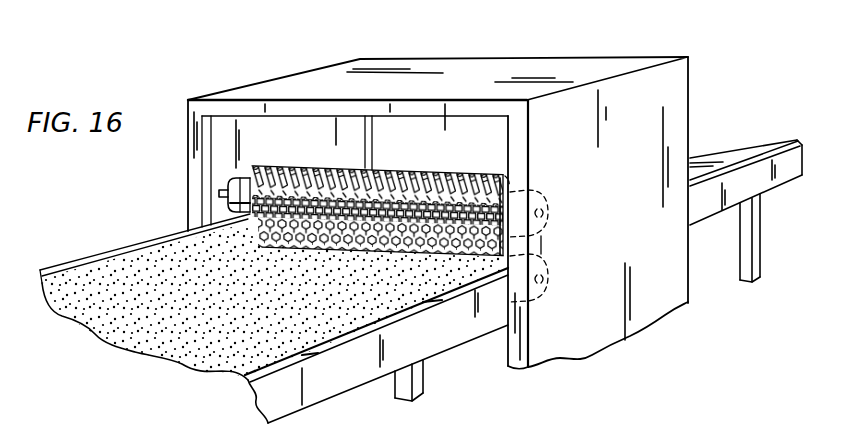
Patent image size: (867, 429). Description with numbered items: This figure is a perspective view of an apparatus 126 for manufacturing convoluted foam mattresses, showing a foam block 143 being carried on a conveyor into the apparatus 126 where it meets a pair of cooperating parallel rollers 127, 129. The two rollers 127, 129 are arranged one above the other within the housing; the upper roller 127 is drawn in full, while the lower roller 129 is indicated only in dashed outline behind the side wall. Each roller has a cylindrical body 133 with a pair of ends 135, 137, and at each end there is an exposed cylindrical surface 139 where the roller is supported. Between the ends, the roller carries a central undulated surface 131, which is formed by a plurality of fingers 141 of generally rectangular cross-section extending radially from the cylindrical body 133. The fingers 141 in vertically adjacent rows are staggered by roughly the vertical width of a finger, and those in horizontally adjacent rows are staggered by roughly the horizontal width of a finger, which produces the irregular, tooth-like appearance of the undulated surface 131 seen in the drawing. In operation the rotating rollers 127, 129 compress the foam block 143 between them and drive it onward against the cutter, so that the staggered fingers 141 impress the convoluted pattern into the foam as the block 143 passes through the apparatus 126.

The apparatus 126 is at (521, 53).
The roller 127 is at (405, 167).
The roller 129 is at (553, 263).
The central undulated surface 131 is at (333, 166).
The cylindrical body 133 is at (553, 190).
The end 135 is at (232, 179).
The end 137 is at (505, 180).
The exposed cylindrical surface 139 is at (546, 239).
The fingers 141 is at (352, 240).
The foam block 143 is at (160, 277).